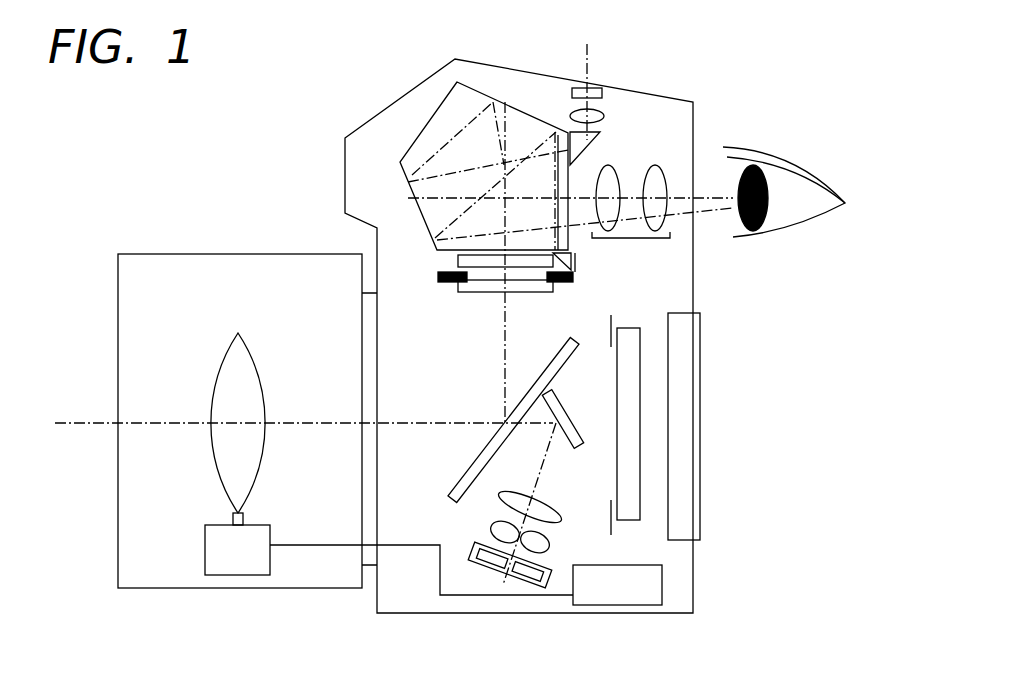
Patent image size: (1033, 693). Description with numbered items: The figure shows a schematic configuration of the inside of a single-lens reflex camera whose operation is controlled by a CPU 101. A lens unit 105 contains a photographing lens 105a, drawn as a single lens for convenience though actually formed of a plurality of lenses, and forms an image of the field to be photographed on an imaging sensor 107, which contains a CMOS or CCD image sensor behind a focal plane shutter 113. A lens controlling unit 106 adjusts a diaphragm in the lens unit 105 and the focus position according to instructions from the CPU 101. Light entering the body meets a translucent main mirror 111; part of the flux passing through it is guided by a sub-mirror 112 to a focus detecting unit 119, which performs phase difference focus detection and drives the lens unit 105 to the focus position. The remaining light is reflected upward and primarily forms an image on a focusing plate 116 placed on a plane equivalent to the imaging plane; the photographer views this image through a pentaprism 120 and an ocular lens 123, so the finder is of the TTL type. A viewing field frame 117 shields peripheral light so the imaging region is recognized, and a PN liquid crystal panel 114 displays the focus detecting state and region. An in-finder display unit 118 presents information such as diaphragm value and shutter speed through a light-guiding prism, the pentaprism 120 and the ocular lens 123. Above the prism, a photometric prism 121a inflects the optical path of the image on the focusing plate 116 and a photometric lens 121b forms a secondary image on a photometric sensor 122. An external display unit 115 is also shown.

The CPU 101 is at (618, 605).
The lens unit 105 is at (227, 253).
The photographing lens 105a is at (213, 392).
The lens controlling unit 106 is at (241, 577).
The imaging sensor 107 is at (641, 505).
The main mirror 111 is at (467, 495).
The sub-mirror 112 is at (568, 420).
The focal plane shutter 113 is at (611, 530).
The PN liquid crystal panel 114 is at (458, 258).
The external display unit 115 is at (700, 478).
The focusing plate 116 is at (553, 285).
The viewing field frame 117 is at (437, 275).
The in-finder display unit 118 is at (575, 263).
The focus detecting unit 119 is at (515, 582).
The pentaprism 120 is at (433, 113).
The photometric prism 121a is at (600, 140).
The photometric lens 121b is at (605, 117).
The photometric sensor 122 is at (587, 86).
The ocular lens 123 is at (630, 238).